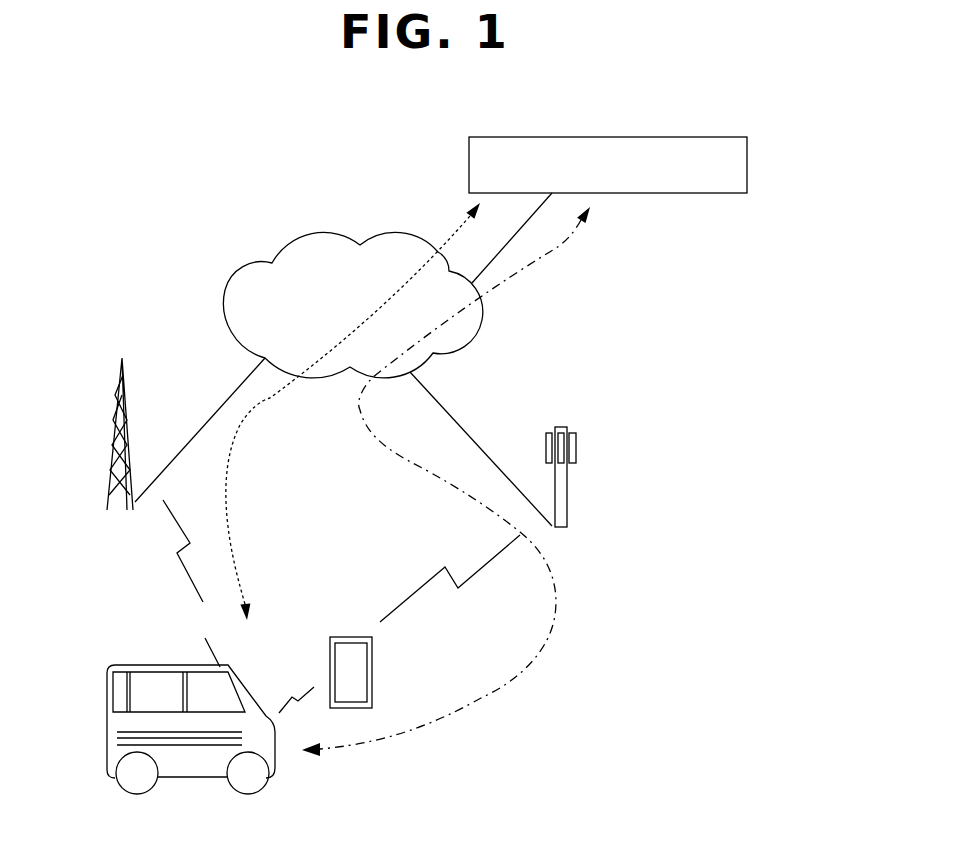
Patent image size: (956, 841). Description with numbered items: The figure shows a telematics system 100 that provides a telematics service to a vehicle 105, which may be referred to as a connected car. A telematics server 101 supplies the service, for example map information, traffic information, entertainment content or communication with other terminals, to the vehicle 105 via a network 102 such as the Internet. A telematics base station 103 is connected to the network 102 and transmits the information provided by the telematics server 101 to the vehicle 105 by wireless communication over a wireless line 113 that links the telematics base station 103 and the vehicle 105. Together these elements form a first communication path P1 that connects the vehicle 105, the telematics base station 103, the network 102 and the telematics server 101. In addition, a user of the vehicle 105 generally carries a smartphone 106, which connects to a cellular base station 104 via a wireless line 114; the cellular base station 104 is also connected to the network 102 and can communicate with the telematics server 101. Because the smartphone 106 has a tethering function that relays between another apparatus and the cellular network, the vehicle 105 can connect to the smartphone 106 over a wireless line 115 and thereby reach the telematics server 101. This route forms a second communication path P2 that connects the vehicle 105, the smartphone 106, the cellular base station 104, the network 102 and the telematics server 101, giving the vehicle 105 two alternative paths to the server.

The telematics system 100 is at (271, 186).
The telematics server 101 is at (748, 149).
The network 102 is at (220, 290).
The telematics base station 103 is at (114, 405).
The cellular base station 104 is at (567, 488).
The vehicle 105 is at (137, 665).
The smartphone 106 is at (373, 663).
The wireless line 113 is at (178, 558).
The wireless line 114 is at (425, 582).
The wireless line 115 is at (300, 690).
The first communication path P1 is at (450, 246).
The second communication path P2 is at (553, 251).